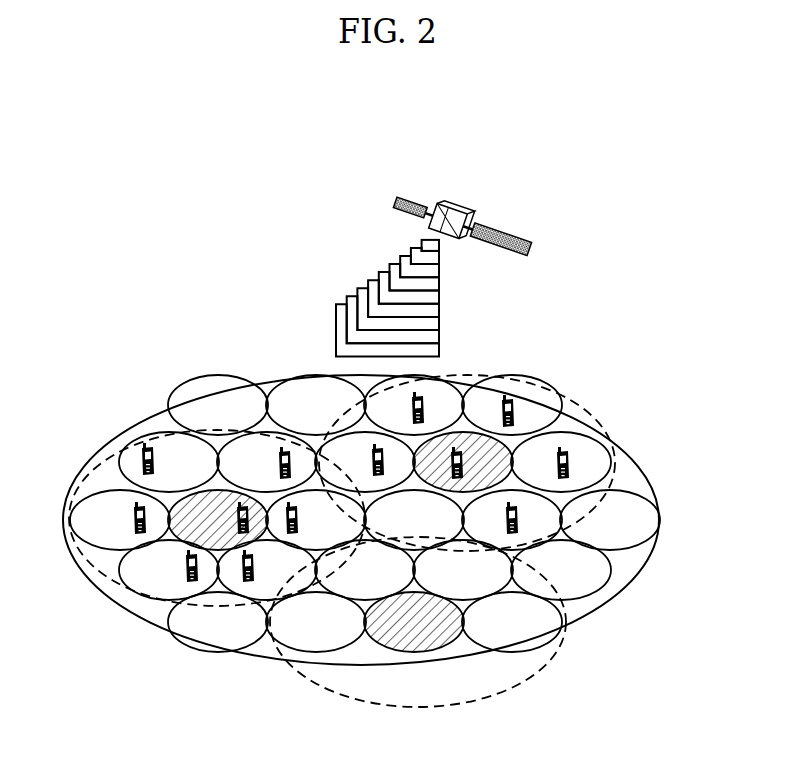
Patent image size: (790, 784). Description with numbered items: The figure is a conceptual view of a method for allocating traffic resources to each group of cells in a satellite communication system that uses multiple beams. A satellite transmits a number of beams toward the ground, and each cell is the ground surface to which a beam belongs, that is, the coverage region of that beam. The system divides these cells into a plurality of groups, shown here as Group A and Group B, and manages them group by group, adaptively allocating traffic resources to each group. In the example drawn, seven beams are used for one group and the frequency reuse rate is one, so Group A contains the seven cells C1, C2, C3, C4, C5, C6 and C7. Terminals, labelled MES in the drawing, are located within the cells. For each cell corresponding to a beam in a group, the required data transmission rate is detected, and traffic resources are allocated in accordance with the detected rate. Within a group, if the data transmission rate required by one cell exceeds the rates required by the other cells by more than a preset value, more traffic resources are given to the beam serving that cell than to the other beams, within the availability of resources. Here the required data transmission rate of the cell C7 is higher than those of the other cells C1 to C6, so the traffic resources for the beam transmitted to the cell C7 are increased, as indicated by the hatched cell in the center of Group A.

The cell C1 is at (169, 462).
The cell C2 is at (267, 462).
The cell C3 is at (316, 520).
The cell C4 is at (267, 570).
The cell C5 is at (169, 570).
The cell C6 is at (120, 520).
The cell C7 is at (218, 520).
The mobile earth station MES is at (169, 464).
The cell group A Group A is at (94, 451).
The cell group B Group B is at (593, 404).